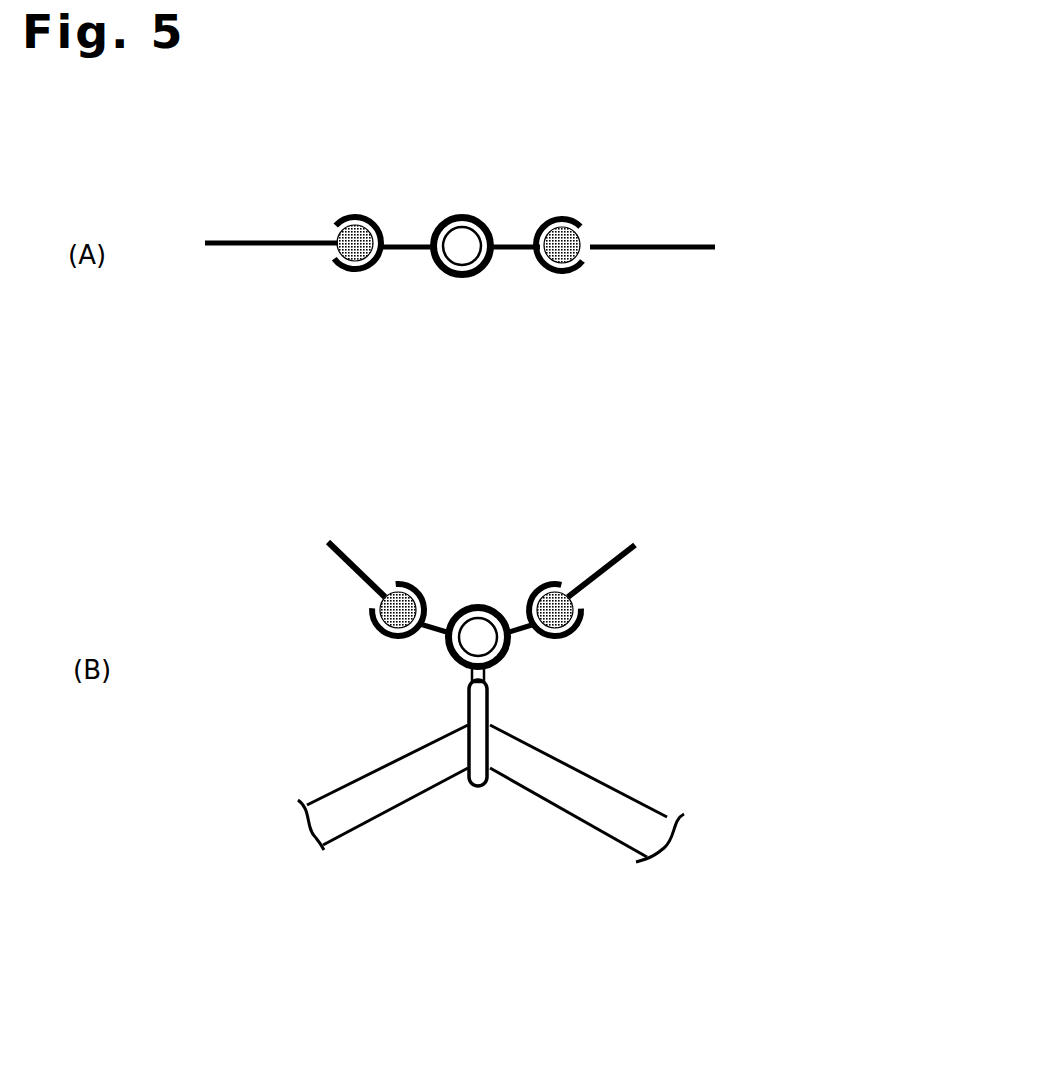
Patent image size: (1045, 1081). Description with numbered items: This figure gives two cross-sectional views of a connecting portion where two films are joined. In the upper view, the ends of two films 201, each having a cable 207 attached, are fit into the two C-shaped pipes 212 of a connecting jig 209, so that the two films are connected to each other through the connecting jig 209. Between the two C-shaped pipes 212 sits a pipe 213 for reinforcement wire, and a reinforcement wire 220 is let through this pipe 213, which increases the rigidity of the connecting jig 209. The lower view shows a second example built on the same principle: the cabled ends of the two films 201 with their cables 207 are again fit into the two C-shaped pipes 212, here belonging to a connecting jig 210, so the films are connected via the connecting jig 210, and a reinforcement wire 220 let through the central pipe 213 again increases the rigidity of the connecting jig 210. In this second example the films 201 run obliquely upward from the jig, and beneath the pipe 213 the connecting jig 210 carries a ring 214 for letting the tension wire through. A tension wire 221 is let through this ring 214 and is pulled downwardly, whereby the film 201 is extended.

The film 201 is at (260, 249).
The cable 207 is at (333, 241).
The C-shaped pipe 212 is at (373, 219).
The reinforcement wire 220 is at (440, 236).
The pipe for reinforcement wire 213 is at (478, 216).
The connecting jig 209 is at (492, 270).
The connecting jig 210 is at (445, 660).
The ring for letting the tension wire through 214 is at (482, 708).
The tension wire 221 is at (540, 788).